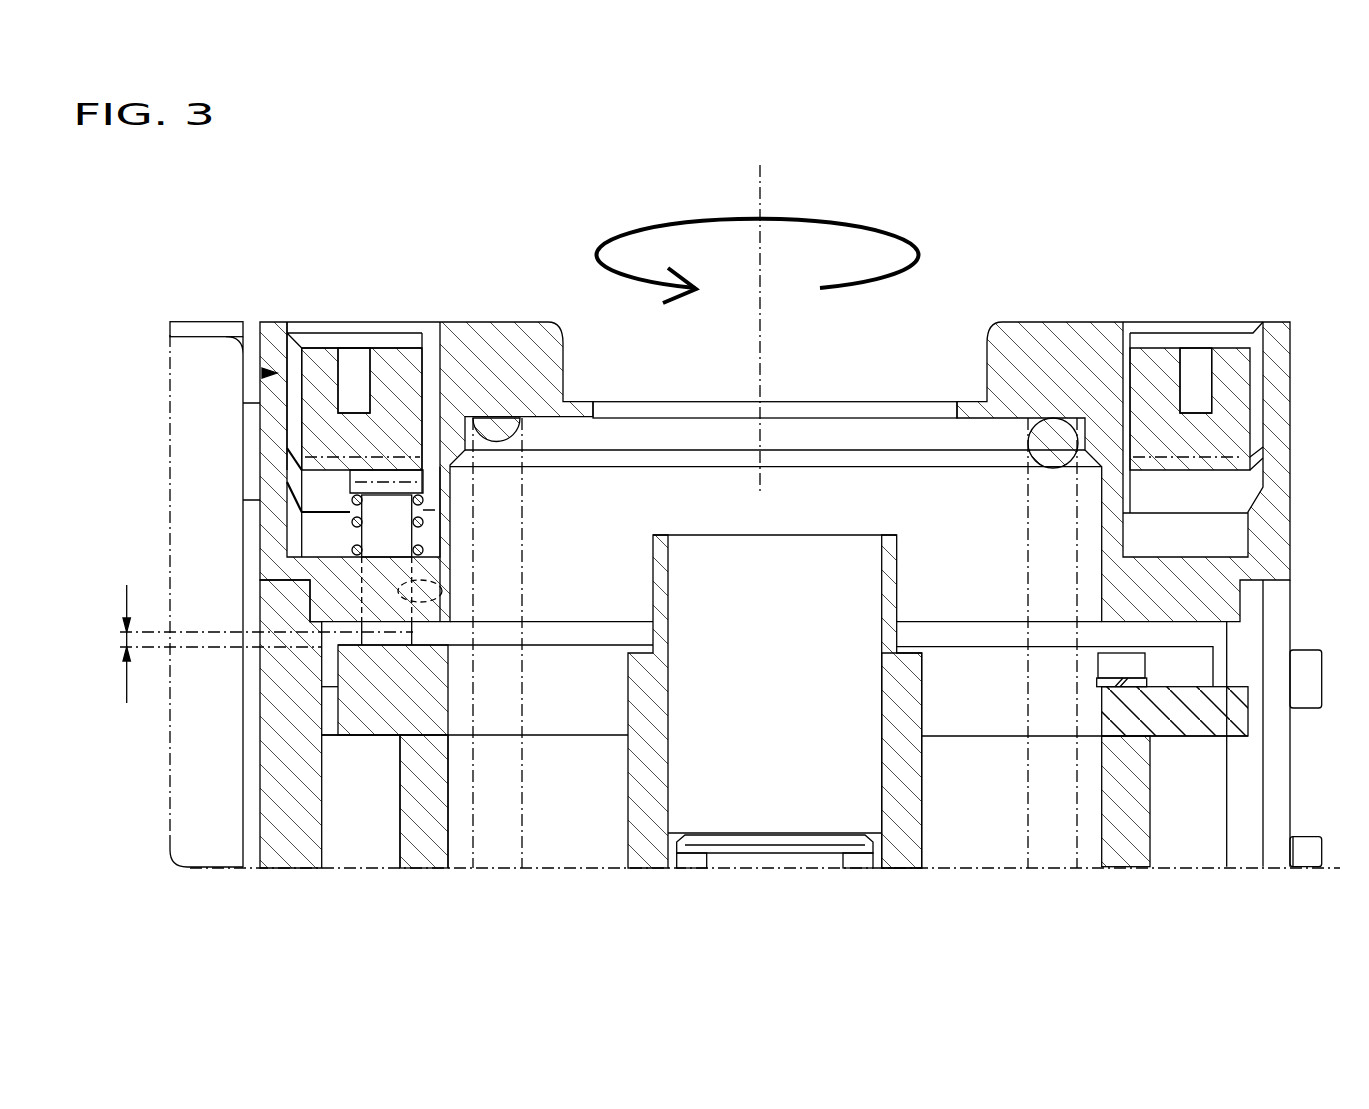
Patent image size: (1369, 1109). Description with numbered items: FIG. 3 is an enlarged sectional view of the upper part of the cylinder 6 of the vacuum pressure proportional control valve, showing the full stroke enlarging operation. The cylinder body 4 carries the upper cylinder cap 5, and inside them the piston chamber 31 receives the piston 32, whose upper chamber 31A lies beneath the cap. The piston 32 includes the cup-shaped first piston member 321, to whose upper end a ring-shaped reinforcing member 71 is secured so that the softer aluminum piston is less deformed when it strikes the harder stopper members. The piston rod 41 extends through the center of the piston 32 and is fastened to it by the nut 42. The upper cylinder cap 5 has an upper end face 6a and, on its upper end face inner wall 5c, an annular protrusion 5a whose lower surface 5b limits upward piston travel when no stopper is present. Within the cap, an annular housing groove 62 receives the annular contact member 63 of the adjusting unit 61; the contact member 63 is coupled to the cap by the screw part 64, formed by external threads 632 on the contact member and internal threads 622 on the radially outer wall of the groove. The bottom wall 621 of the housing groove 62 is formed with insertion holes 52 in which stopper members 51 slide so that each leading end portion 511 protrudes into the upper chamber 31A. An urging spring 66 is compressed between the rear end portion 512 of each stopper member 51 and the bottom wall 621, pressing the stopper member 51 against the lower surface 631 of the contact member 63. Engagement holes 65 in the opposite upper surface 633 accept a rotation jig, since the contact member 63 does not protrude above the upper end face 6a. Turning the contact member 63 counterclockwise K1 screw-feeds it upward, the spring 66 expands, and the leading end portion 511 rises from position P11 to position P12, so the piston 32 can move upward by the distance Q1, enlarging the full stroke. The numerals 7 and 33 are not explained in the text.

The holding member 7 is at (203, 326).
The reinforcing member 71 is at (350, 730).
The adjusting unit 61 is at (265, 373).
The housing groove 62 is at (430, 335).
The contact member 63 is at (390, 365).
The screw part 64 is at (192, 439).
The internal threads 622 is at (294, 459).
The external threads 632 is at (318, 497).
The lower surface 631 is at (325, 478).
The urging spring 66 is at (347, 513).
The engagement hole 65 is at (342, 362).
The upper surface 633 is at (1162, 347).
The bottom wall 621 is at (327, 557).
The cylinder 6 is at (720, 587).
The upper cylinder cap 5 is at (721, 539).
The upper end face 6a is at (508, 323).
The annular protrusion 5a is at (1223, 593).
The lower surface 5b is at (1227, 638).
The upper end face inner wall 5c is at (555, 433).
The cylinder body 4 is at (698, 772).
The piston chamber 31 is at (361, 849).
The upper chamber 31A is at (353, 838).
The piston 32 is at (445, 849).
The first piston member 321 is at (445, 849).
The ball 33 is at (1043, 433).
The stopper member 51 is at (502, 700).
The leading end portion 511 is at (385, 648).
The rear end portion 512 is at (425, 484).
The insertion hole 52 is at (445, 582).
The piston rod 41 is at (852, 857).
The nut 42 is at (903, 850).
The counterclockwise rotation K1 is at (872, 228).
The position P11 is at (120, 647).
The position P12 is at (120, 632).
The distance Q1 is at (126, 659).